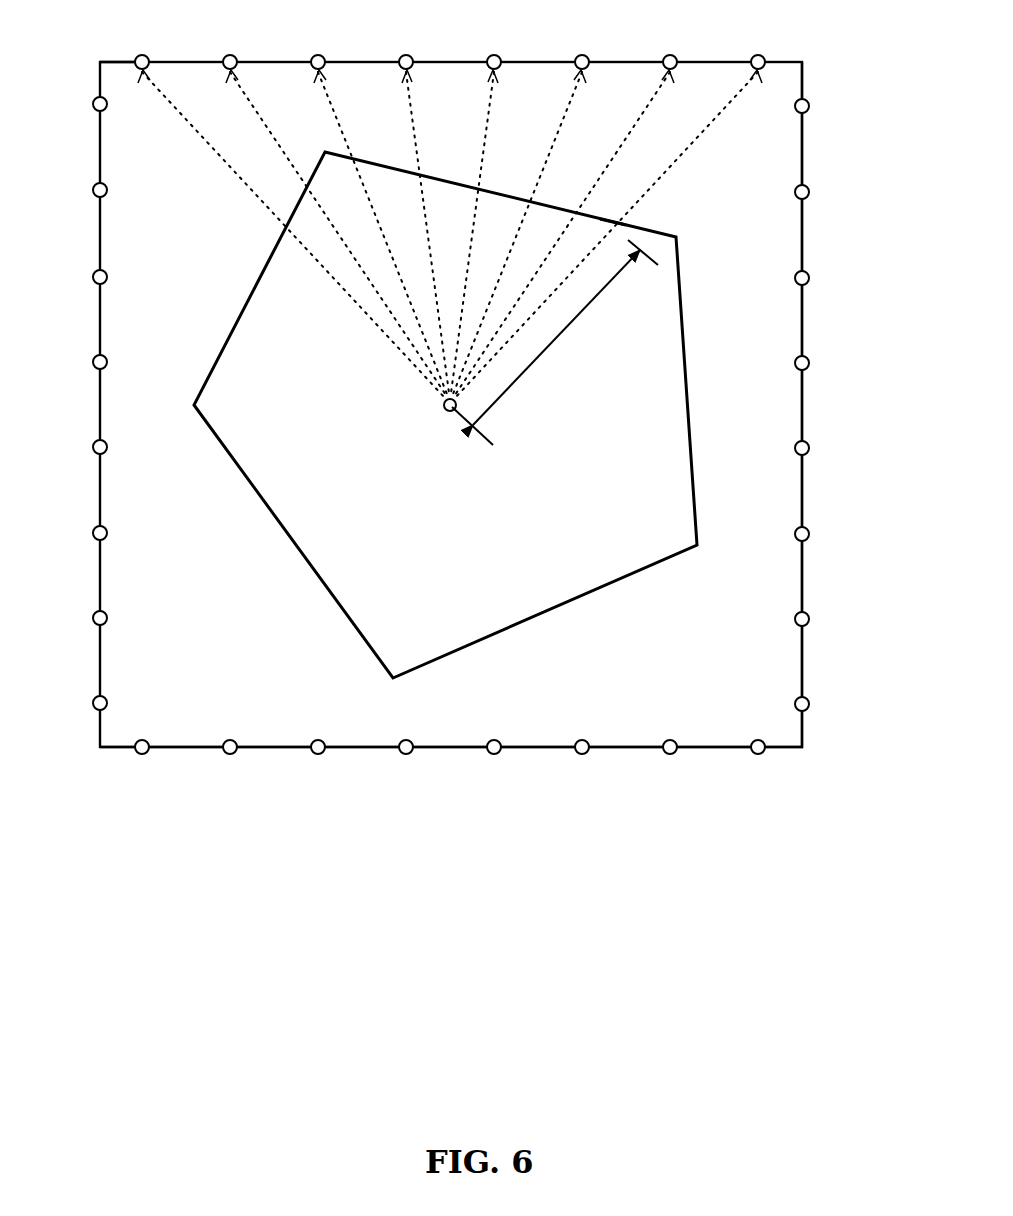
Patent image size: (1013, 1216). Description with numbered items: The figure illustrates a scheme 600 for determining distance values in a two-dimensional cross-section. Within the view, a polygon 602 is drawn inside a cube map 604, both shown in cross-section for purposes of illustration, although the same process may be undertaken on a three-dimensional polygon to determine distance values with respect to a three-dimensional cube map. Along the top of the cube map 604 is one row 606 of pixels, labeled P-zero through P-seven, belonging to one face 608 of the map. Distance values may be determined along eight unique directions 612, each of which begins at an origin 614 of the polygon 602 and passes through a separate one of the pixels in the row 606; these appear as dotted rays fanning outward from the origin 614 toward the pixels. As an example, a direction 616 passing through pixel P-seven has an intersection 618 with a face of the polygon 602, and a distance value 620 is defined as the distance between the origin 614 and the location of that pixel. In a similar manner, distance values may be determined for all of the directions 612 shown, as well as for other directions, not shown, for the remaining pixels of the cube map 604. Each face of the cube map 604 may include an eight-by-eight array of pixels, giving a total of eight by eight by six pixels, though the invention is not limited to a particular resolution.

The scheme 600 is at (162, 893).
The polygon 602 is at (430, 617).
The cube map 604 is at (813, 759).
The row of pixels 606 is at (802, 20).
The face 608 is at (108, 60).
The directions 612 is at (235, 198).
The origin 614 is at (450, 413).
The direction 616 is at (698, 128).
The intersection 618 is at (613, 221).
The distance value 620 is at (562, 333).